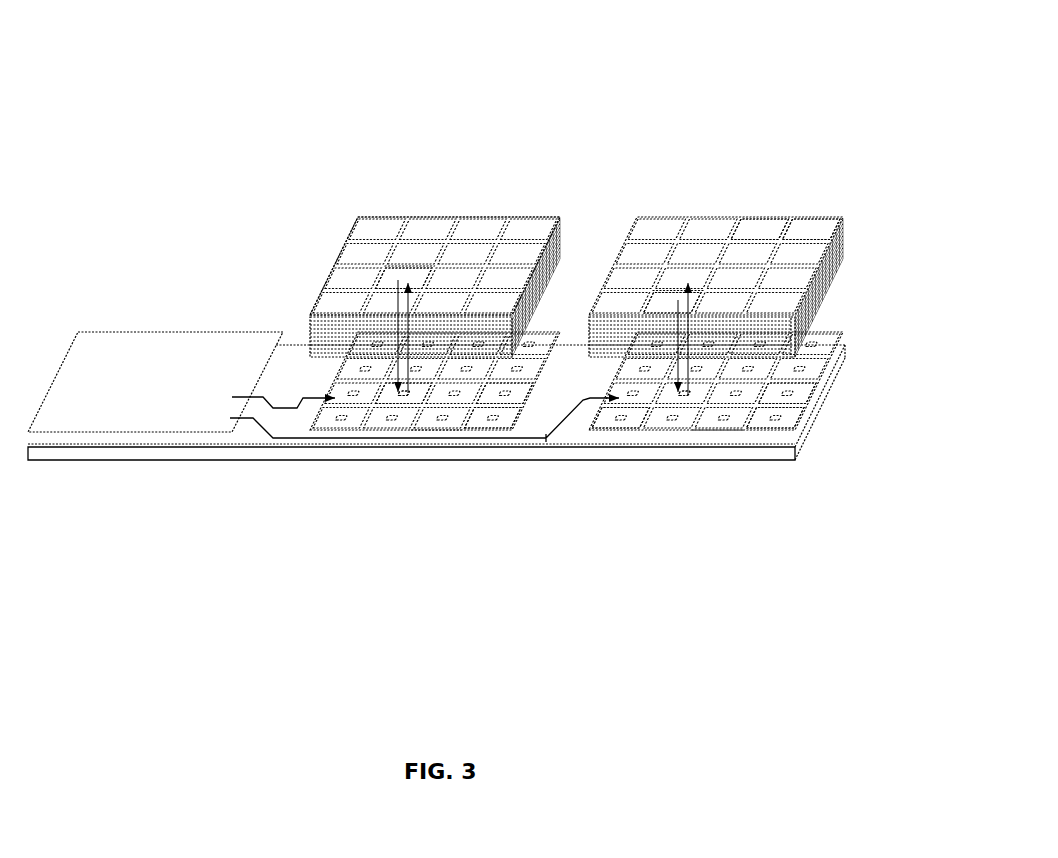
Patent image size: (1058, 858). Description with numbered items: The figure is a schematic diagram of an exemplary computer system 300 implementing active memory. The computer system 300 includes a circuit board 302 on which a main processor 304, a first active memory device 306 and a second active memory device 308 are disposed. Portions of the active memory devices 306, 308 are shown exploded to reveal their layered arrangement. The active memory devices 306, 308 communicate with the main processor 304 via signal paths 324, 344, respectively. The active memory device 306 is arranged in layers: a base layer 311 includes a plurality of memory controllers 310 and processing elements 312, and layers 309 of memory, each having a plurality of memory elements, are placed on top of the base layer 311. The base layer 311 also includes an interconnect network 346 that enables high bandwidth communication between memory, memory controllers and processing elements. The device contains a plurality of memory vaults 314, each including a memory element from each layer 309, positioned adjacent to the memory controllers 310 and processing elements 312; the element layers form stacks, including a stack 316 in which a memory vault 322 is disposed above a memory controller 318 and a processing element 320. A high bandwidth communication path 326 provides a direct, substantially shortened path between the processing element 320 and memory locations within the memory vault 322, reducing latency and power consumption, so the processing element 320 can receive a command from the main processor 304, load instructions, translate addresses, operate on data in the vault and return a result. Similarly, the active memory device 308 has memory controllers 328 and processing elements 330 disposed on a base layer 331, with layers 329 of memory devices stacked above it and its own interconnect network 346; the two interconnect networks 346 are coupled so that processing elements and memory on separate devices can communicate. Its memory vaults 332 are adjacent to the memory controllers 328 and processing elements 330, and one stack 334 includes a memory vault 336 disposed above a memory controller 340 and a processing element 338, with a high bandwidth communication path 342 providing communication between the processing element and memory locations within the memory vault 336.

The computer system 300 is at (335, 80).
The circuit board 302 is at (178, 455).
The main processor 304 is at (174, 391).
The active memory device 306 is at (482, 211).
The active memory device 308 is at (704, 213).
The layers 309 is at (308, 316).
The memory controllers 310 is at (455, 396).
The base layer 311 is at (422, 435).
The processing elements 312 is at (522, 398).
The memory vaults 314 is at (538, 253).
The stack 316 is at (375, 280).
The memory controller 318 is at (405, 396).
The processing element 320 is at (413, 398).
The memory vault 322 is at (388, 273).
The signal path 324 is at (303, 397).
The high bandwidth communication path 326 is at (395, 301).
The memory controllers 328 is at (733, 395).
The layers 329 is at (843, 215).
The processing elements 330 is at (793, 398).
The base layer 331 is at (697, 436).
The memory vaults 332 is at (815, 230).
The stack 334 is at (691, 272).
The memory vault 336 is at (679, 290).
The processing element 338 is at (683, 398).
The memory controller 340 is at (625, 430).
The high bandwidth communication path 342 is at (674, 296).
The signal path 344 is at (285, 438).
The interconnect network 346 is at (543, 447).